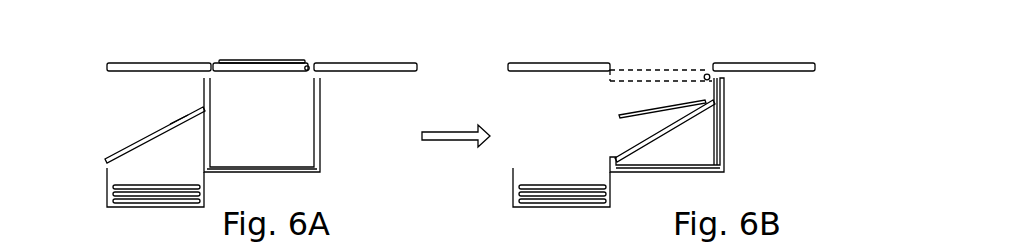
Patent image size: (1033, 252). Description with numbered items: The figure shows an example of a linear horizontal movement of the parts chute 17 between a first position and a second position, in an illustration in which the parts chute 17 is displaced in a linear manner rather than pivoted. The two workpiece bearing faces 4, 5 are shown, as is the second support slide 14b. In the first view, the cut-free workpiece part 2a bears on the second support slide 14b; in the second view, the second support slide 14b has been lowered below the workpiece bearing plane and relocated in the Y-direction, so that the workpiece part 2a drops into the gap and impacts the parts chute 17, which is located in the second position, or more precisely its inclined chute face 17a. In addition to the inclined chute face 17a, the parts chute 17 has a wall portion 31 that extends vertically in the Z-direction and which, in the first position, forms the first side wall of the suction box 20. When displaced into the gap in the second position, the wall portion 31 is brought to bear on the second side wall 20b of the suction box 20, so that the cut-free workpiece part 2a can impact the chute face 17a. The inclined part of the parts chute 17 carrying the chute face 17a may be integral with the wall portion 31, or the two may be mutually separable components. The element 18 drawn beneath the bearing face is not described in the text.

In FIG. 6A, the workpiece bearing face 4 is at (163, 63).
In FIG. 6B, the workpiece bearing face 4 is at (554, 63).
In FIG. 6A, the workpiece bearing face 5 is at (380, 63).
In FIG. 6B, the workpiece bearing face 5 is at (772, 63).
In FIG. 6A, the workpiece part 2a is at (272, 60).
In FIG. 6B, the workpiece part 2a is at (645, 111).
In FIG. 6A, the second support slide 14b is at (242, 62).
In FIG. 6B, the second support slide 14b is at (647, 70).
In FIG. 6A, the wall portion 31 is at (203, 95).
In FIG. 6B, the wall portion 31 is at (714, 89).
In FIG. 6A, the suction box 20 is at (330, 108).
In FIG. 6B, the suction box 20 is at (732, 121).
In FIG. 6A, the second side wall 20b is at (321, 160).
In FIG. 6B, the second side wall 20b is at (726, 140).
In FIG. 6A, the parts chute 17 is at (131, 144).
In FIG. 6B, the parts chute 17 is at (647, 141).
In FIG. 6A, the chute face 17a is at (156, 126).
In FIG. 6A, the heat exchanger 18 is at (109, 190).
In FIG. 6B, the heat exchanger 18 is at (513, 190).